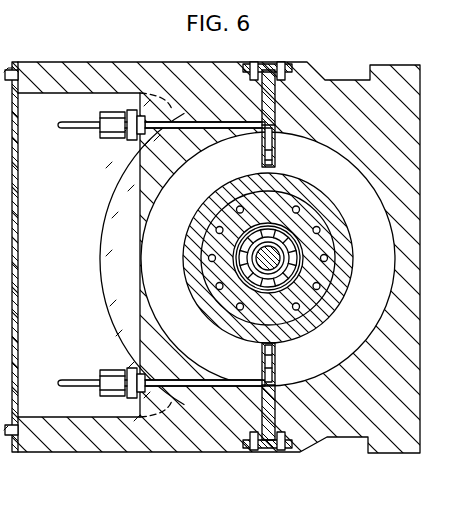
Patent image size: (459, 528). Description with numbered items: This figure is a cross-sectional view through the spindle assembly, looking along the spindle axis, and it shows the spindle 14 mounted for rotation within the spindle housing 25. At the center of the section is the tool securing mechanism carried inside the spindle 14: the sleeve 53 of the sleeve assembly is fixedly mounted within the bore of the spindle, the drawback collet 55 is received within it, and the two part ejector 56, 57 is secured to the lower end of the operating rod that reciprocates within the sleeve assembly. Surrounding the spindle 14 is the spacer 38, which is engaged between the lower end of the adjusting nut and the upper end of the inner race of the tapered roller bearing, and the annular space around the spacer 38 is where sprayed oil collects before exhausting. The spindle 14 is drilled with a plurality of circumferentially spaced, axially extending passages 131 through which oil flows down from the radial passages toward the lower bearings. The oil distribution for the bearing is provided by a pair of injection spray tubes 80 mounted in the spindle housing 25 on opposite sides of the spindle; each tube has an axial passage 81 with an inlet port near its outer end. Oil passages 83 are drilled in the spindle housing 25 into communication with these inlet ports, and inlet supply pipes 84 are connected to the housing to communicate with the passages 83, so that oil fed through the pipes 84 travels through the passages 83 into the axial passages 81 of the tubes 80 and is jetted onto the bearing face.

The housing 25 is at (83, 68).
The injection spray tubes 80 is at (270, 62).
The inlet supply pipes 84 is at (81, 130).
The oil passages 83 is at (252, 138).
The axial passage 81 is at (276, 152).
The spindle 14 is at (257, 253).
The spacer 38 is at (207, 212).
The sleeve 53 is at (240, 250).
The drawback collet 55 is at (245, 262).
The ejector part 56 is at (262, 267).
The ejector part 57 is at (208, 303).
The axially extending passages 131 is at (299, 207).